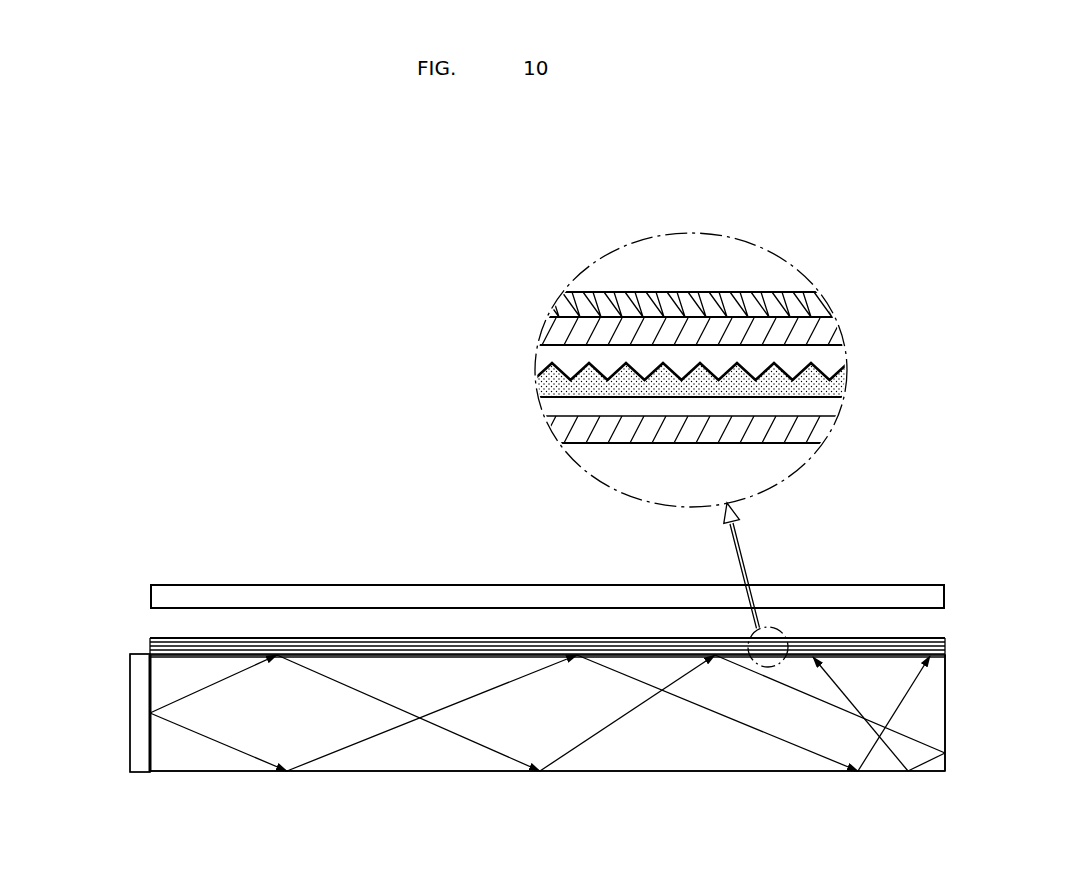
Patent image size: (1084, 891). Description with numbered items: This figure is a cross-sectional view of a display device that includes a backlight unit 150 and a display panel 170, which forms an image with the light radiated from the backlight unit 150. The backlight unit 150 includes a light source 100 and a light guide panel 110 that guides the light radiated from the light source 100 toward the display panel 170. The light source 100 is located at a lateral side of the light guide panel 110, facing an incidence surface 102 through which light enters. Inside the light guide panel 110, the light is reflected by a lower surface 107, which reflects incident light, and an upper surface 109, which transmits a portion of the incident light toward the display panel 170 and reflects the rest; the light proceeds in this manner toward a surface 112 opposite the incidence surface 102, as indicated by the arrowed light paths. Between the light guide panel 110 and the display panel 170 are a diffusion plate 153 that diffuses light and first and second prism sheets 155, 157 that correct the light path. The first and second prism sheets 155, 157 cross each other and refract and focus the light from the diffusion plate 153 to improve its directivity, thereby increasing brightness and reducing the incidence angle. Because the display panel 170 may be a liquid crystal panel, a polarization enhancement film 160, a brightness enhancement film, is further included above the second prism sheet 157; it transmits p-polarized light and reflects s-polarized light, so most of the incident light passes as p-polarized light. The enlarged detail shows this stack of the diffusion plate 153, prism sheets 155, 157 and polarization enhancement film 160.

The light source 100 is at (140, 767).
The incidence surface 102 is at (152, 745).
The lower surface 107 is at (425, 757).
The upper surface 109 is at (428, 660).
The light guide panel 110 is at (730, 772).
The surface opposite to the incidence surface 112 is at (945, 707).
The backlight unit 150 is at (108, 664).
The diffusion plate 153 is at (817, 432).
The first prism sheet 155 is at (830, 385).
The second prism sheet 157 is at (828, 330).
The polarization enhancement film 160 is at (817, 307).
The display panel 170 is at (887, 584).